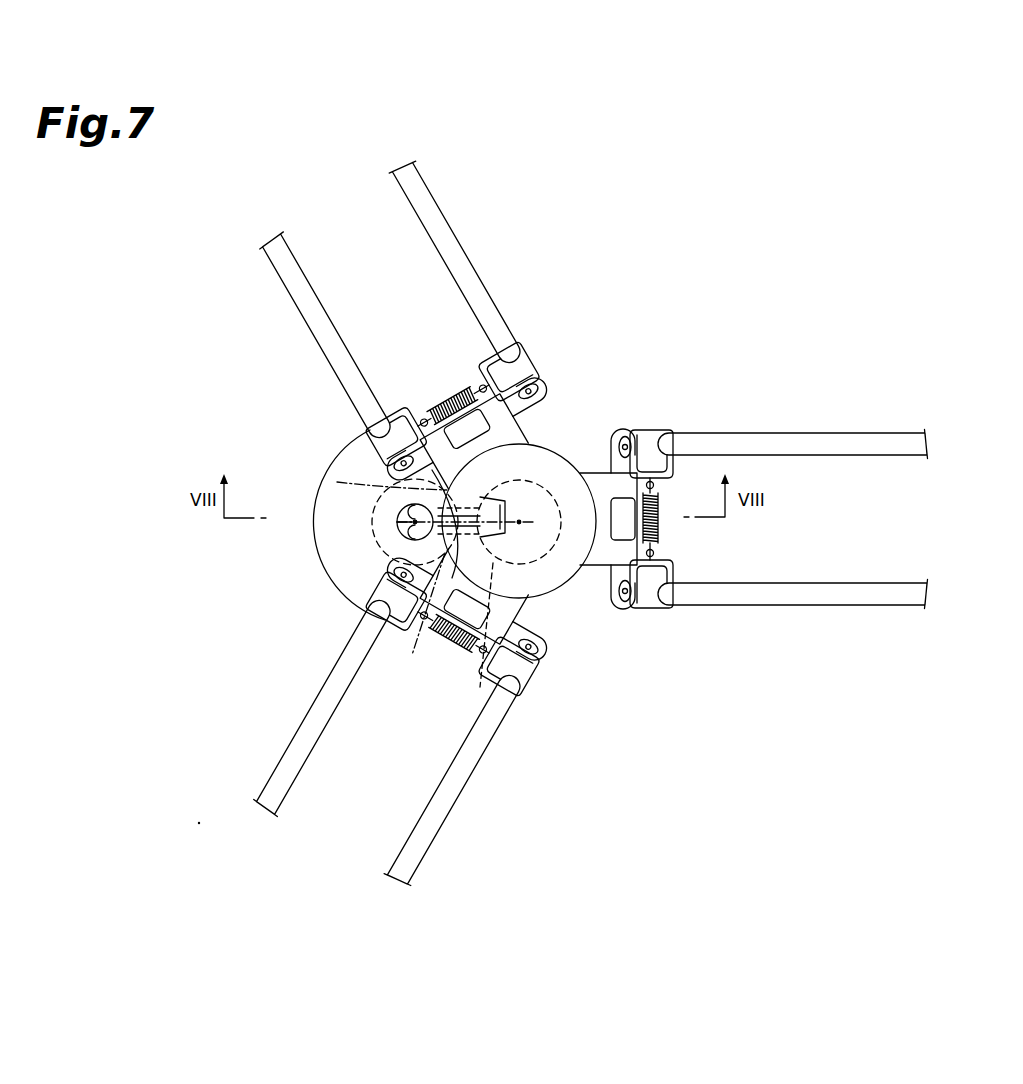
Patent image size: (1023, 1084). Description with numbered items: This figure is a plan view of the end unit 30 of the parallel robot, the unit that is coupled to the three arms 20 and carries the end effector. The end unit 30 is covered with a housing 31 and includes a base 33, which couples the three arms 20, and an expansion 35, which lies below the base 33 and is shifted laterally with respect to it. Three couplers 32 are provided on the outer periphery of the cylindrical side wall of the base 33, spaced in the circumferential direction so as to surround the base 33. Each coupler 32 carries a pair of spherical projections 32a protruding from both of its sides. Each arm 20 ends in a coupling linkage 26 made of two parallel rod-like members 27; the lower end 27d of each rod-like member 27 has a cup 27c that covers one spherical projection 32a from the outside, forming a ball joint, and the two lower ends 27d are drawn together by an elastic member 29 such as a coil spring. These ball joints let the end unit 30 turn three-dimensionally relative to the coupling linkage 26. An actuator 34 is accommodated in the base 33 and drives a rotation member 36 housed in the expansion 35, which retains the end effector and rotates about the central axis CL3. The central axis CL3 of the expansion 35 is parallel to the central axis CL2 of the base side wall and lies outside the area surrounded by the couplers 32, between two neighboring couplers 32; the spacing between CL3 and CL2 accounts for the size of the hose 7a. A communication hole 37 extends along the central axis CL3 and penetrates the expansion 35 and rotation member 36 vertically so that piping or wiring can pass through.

The arm 20 is at (546, 524).
The coupling linkage 26 is at (589, 524).
The rod-like member 27 is at (866, 376).
The cup 27c is at (620, 432).
The lower end 27d is at (652, 437).
The elastic member 29 is at (658, 533).
The end unit 30 is at (616, 340).
The housing 31 is at (443, 323).
The coupler 32 is at (583, 590).
The spherical projection 32a is at (614, 456).
The base 33 is at (437, 403).
The actuator 34 is at (447, 660).
The expansion 35 is at (370, 427).
The rotation member 36 is at (378, 537).
The communication hole 37 is at (397, 538).
The hose 7a is at (340, 482).
The central axis CL2 is at (522, 525).
The central axis CL3 is at (405, 520).